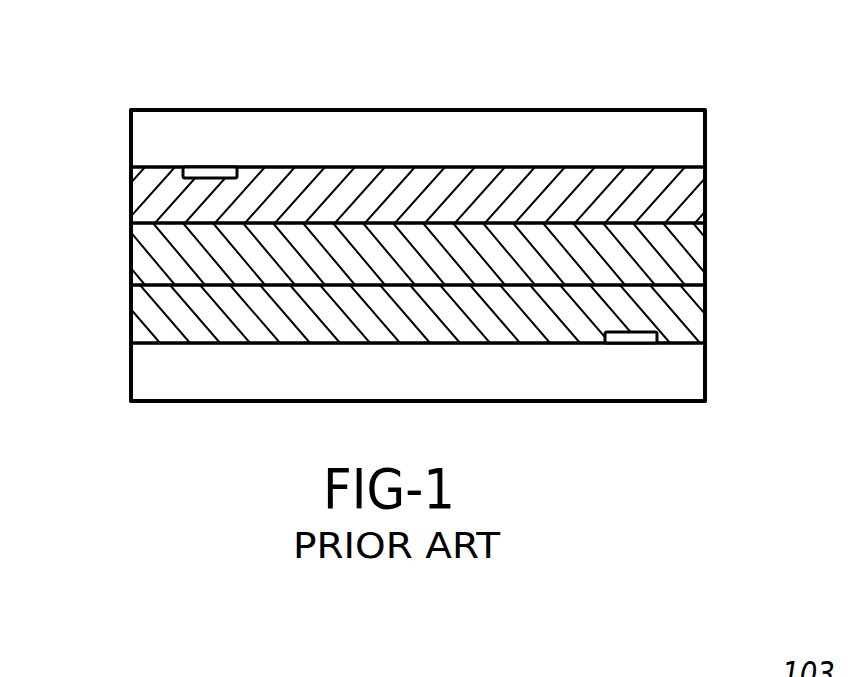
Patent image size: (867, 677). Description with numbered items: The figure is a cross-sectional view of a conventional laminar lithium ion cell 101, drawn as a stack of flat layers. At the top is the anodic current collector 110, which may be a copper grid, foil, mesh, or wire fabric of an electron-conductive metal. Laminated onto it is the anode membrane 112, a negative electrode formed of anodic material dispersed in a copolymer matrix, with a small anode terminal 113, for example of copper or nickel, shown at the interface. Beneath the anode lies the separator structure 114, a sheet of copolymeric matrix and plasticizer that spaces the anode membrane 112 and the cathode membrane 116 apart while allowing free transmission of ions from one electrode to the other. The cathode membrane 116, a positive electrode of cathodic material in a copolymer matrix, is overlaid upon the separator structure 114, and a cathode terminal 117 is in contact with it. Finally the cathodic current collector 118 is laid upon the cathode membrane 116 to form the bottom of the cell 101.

The laminar lithium ion cell 101 is at (617, 112).
The anodic current collector 110 is at (144, 135).
The anode membrane 112 is at (703, 190).
The anode terminal 113 is at (203, 172).
The separator structure 114 is at (137, 262).
The cathode membrane 116 is at (705, 313).
The cathode terminal 117 is at (637, 338).
The cathodic current collector 118 is at (141, 378).